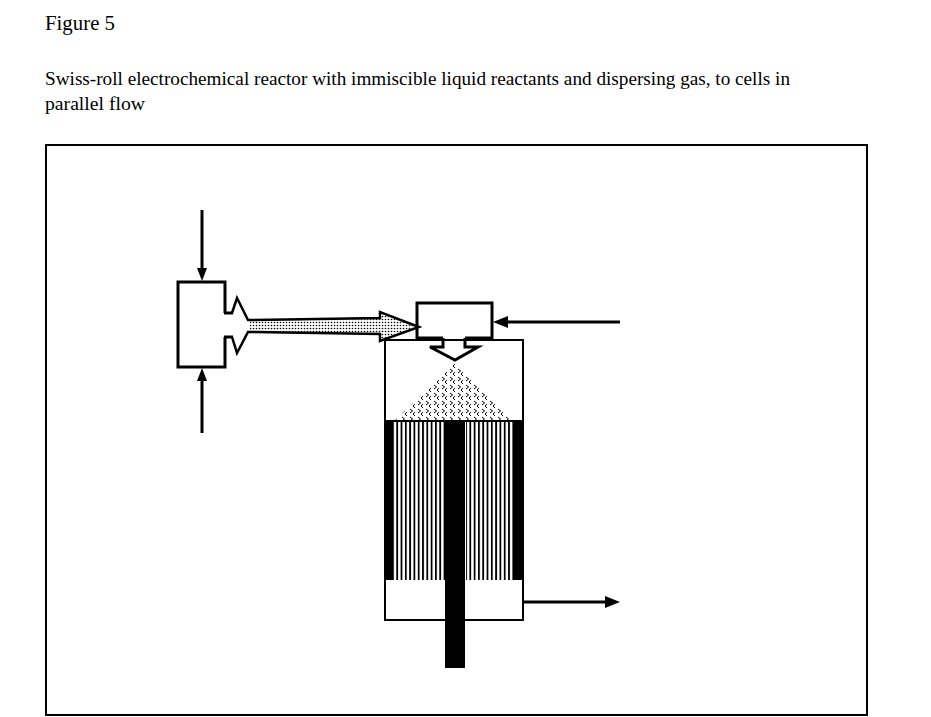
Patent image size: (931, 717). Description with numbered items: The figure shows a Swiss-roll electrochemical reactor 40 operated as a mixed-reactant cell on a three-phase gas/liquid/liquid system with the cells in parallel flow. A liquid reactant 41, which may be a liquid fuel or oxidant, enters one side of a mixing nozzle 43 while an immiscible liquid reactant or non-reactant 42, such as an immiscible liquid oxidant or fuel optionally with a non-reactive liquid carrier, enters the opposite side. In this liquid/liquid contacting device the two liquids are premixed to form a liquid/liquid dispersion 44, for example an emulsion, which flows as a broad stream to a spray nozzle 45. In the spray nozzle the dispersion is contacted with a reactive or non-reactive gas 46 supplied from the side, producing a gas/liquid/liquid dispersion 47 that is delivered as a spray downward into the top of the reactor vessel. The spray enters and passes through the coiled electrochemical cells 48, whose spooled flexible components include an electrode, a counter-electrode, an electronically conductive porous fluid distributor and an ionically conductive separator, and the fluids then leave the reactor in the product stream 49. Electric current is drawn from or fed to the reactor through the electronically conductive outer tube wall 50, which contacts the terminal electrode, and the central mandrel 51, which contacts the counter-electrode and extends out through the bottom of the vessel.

The Swiss-roll electrochemical reactor 40 is at (377, 503).
The liquid reactant 41 is at (191, 413).
The immiscible liquid reactant or non-reactant 42 is at (191, 235).
The mixing nozzle 43 is at (170, 323).
The liquid/liquid dispersion 44 is at (325, 317).
The spray nozzle 45 is at (460, 295).
The reactive or non-reactive gas 46 is at (571, 325).
The gas/liquid/liquid dispersion 47 is at (442, 385).
The coiled electrochemical cells 48 is at (503, 538).
The product stream 49 is at (593, 605).
The outer tube wall 50 is at (531, 496).
The central mandrel 51 is at (437, 646).